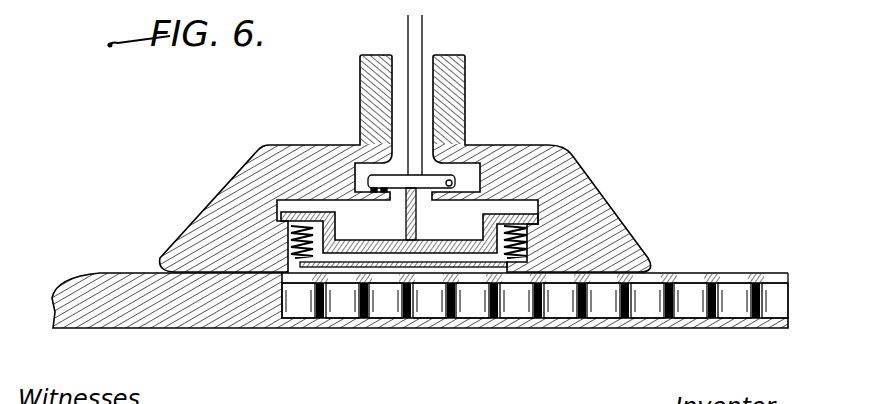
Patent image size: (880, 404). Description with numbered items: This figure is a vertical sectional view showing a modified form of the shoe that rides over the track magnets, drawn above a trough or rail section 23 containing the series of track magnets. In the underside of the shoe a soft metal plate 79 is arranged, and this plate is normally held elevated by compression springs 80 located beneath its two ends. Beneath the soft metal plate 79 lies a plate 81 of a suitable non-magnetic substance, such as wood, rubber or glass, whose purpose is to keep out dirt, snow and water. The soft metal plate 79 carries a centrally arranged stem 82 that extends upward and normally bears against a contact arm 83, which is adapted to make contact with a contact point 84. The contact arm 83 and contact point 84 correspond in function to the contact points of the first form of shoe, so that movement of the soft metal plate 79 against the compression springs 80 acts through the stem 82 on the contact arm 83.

The base plate / rack frame 23 is at (556, 314).
The soft metal plate 79 is at (452, 248).
The compression springs 80 is at (288, 232).
The plate of non-magnetic substance 81 is at (397, 260).
The stem 82 is at (407, 207).
The contact arm 83 is at (416, 172).
The contact point 84 is at (383, 196).